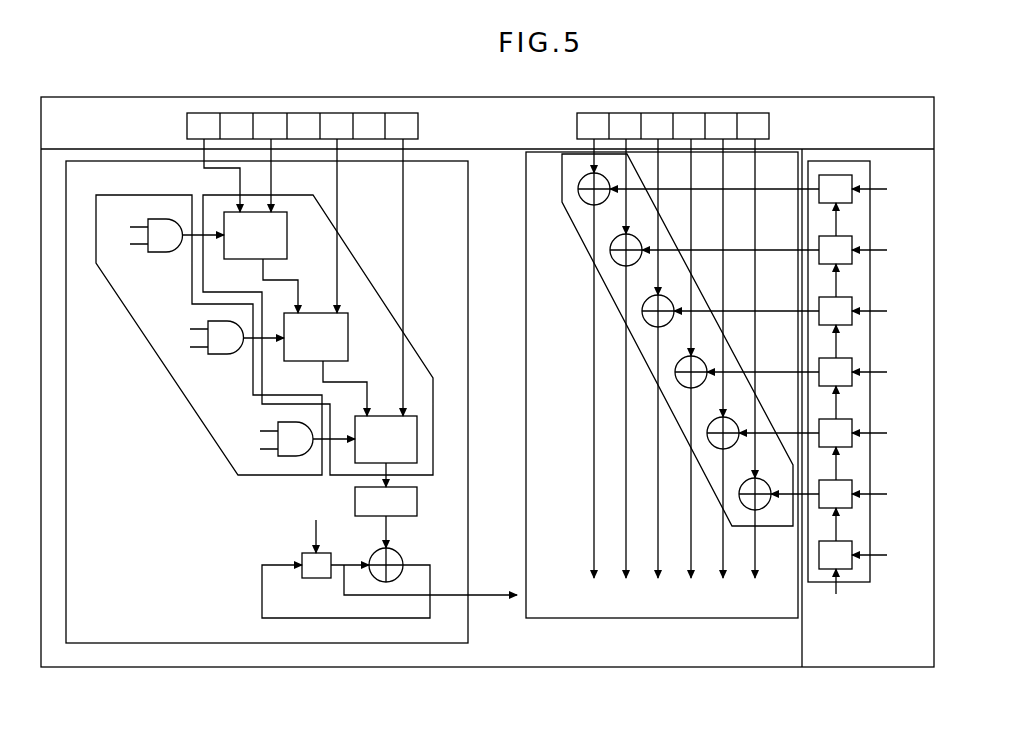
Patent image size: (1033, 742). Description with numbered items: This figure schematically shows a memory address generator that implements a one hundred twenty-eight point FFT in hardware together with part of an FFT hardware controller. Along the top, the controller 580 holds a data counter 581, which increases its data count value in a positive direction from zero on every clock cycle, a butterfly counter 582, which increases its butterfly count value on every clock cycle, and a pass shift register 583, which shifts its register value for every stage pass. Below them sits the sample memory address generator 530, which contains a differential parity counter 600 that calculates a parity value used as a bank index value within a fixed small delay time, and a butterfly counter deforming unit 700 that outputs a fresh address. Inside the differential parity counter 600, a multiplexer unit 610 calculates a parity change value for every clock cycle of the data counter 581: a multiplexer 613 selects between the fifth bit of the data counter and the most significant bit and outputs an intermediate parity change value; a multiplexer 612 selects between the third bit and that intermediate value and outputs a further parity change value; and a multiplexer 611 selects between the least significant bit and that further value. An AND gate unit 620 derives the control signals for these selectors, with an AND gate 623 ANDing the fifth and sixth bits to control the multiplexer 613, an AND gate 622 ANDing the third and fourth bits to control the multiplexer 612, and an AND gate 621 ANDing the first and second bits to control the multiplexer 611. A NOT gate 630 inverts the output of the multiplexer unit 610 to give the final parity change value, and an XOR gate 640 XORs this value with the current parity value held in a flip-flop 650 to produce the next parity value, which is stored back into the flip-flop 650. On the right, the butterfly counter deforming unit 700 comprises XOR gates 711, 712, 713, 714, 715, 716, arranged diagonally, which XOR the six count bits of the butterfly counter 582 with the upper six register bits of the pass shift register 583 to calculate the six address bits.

The sample memory address generator 530 is at (518, 650).
The controller 580 is at (517, 112).
The data counter 581 is at (419, 126).
The butterfly counter 582 is at (770, 126).
The pass shift register 583 is at (845, 161).
The differential parity counter 600 is at (385, 645).
The multiplexer unit 610 is at (334, 335).
The multiplexer 611 is at (418, 440).
The multiplexer 612 is at (349, 337).
The multiplexer 613 is at (288, 236).
The AND gate unit 620 is at (225, 356).
The AND gate 621 is at (283, 421).
The AND gate 622 is at (217, 355).
The AND gate 623 is at (155, 253).
The NOT gate 630 is at (418, 500).
The XOR gate 640 is at (397, 555).
The flip-flop 650 is at (305, 552).
The butterfly counter deforming unit 700 is at (672, 423).
The XOR gate 711 is at (744, 506).
The XOR gate 712 is at (712, 445).
The XOR gate 713 is at (680, 384).
The XOR gate 714 is at (647, 323).
The XOR gate 715 is at (615, 262).
The XOR gate 716 is at (583, 201).